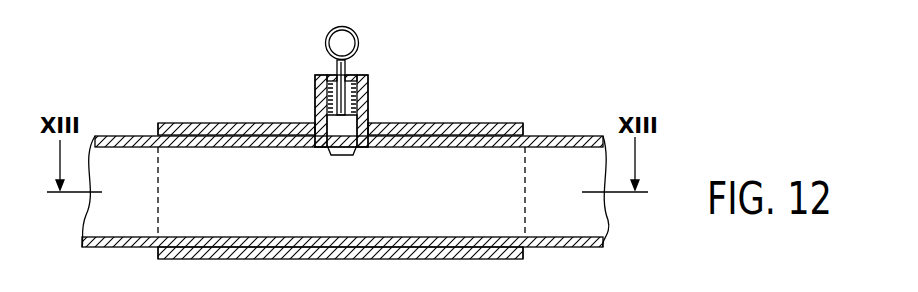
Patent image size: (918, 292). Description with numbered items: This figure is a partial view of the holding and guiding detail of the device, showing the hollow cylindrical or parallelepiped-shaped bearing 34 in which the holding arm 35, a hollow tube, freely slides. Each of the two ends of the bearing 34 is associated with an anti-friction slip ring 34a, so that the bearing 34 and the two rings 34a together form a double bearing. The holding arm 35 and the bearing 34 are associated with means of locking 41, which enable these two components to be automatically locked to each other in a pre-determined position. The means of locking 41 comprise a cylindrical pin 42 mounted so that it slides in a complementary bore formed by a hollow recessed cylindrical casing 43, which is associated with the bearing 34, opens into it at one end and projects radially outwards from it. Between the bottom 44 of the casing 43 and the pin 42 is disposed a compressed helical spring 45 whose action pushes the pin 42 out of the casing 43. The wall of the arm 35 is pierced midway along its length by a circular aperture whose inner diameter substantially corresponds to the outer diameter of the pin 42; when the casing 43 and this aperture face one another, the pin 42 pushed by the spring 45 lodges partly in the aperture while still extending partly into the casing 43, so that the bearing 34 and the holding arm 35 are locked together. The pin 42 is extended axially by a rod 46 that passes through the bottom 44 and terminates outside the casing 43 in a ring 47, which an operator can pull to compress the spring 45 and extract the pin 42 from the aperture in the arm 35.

The bearing 34 is at (445, 128).
The anti-friction slip ring 34a is at (158, 128).
The holding arm 35 is at (543, 138).
The means of locking 41 is at (268, 115).
The cylindrical pin 42 is at (352, 122).
The casing 43 is at (318, 100).
The bottom of the casing 44 is at (330, 80).
The compressed helical spring 45 is at (357, 80).
The rod 46 is at (352, 62).
The ring 47 is at (330, 34).